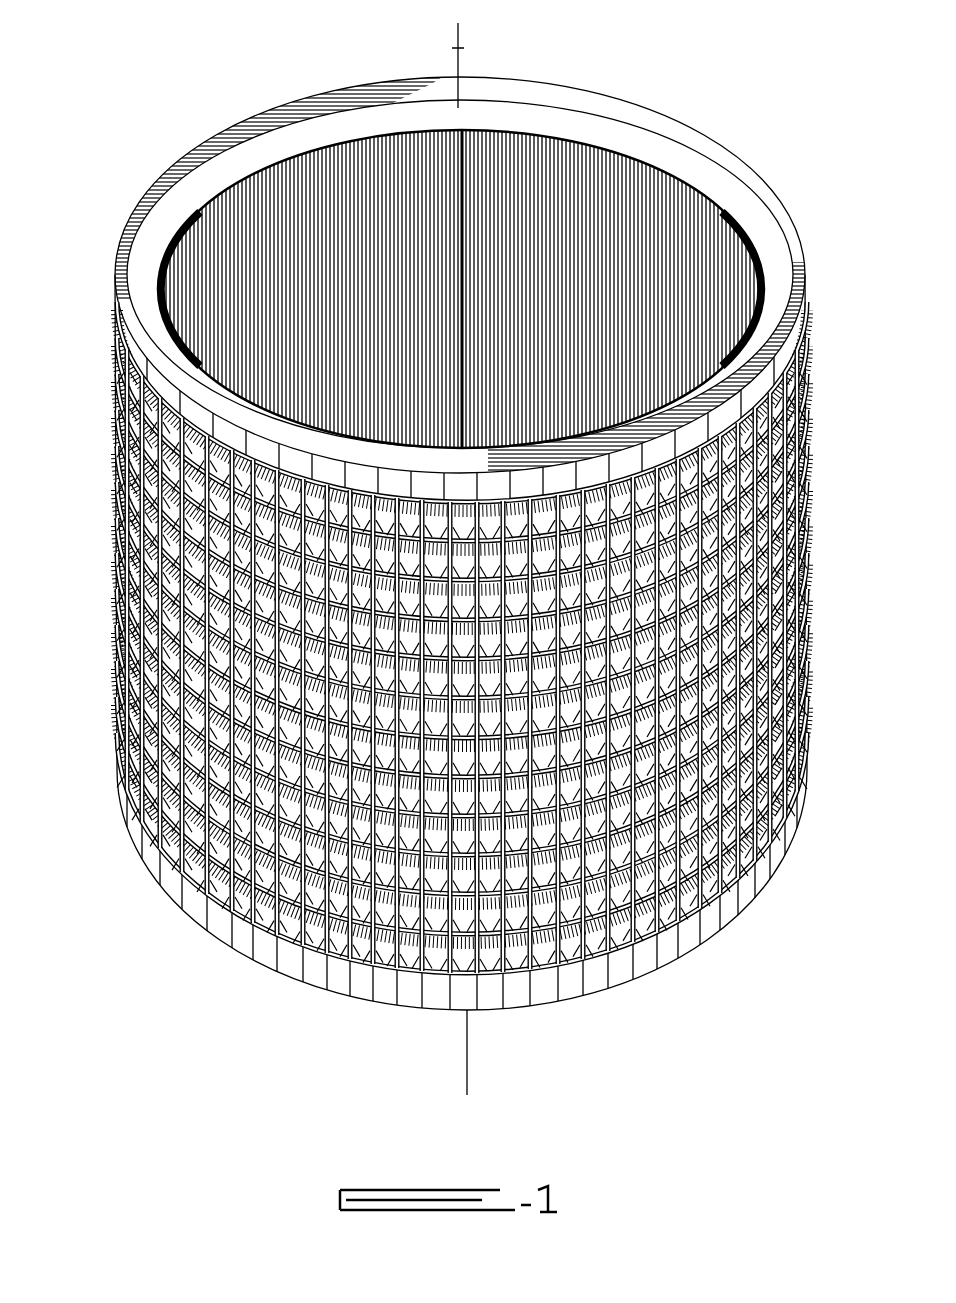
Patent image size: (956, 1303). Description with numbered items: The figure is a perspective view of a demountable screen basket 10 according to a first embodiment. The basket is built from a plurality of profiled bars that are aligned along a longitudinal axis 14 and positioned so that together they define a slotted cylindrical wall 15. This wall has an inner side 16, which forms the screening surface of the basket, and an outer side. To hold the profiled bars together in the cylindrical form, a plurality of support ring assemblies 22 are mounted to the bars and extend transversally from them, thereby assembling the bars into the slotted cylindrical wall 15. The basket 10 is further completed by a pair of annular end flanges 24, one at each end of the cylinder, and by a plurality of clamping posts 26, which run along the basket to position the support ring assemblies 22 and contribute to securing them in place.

The demountable screen basket 10 is at (180, 106).
The longitudinal axis 14 is at (462, 48).
The slotted cylindrical wall 15 is at (290, 282).
The inner side 16 is at (610, 197).
The support ring assemblies 22 is at (770, 420).
The annular end flanges 24 is at (780, 318).
The clamping posts 26 is at (178, 628).